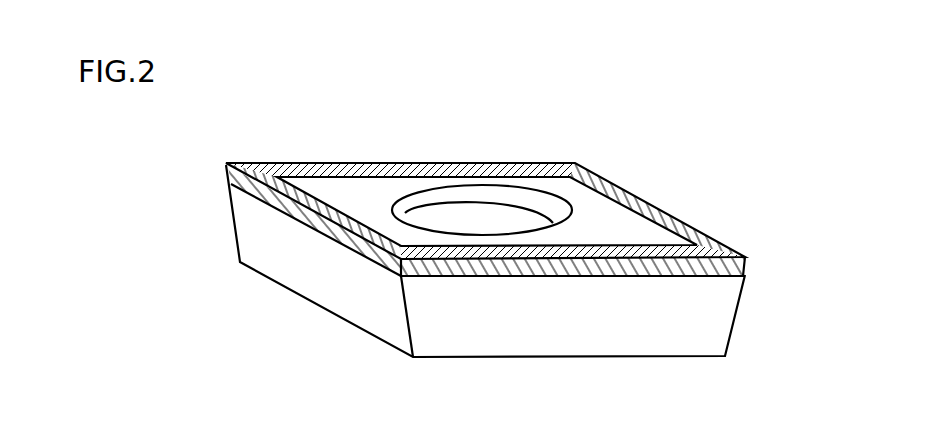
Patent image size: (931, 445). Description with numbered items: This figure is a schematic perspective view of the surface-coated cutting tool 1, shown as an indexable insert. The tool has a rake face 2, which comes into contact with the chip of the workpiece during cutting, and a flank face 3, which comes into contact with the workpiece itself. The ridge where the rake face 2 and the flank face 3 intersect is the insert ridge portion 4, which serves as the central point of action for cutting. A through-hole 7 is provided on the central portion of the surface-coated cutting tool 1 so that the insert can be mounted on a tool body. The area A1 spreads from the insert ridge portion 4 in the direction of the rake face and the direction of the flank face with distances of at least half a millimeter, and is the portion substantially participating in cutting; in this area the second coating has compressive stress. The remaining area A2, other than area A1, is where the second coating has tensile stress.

The surface-coated cutting tool 1 is at (486, 235).
The rake face 2 is at (388, 183).
The flank face 3 is at (315, 273).
The insert ridge portion 4 is at (287, 197).
The through-hole 7 is at (484, 220).
The area A1 is at (228, 168).
The area A2 is at (253, 215).